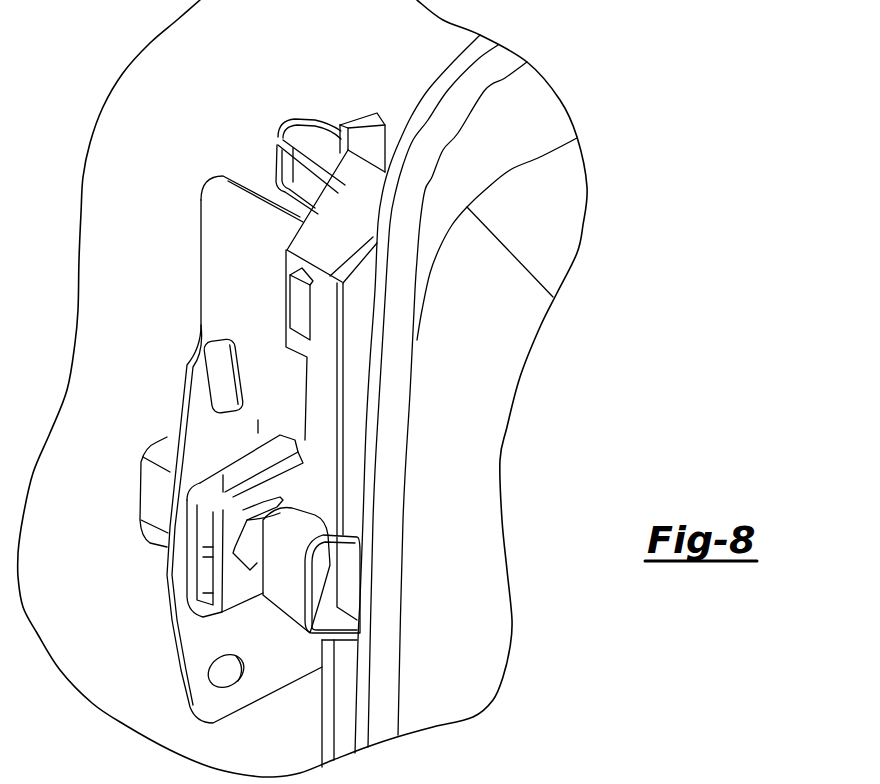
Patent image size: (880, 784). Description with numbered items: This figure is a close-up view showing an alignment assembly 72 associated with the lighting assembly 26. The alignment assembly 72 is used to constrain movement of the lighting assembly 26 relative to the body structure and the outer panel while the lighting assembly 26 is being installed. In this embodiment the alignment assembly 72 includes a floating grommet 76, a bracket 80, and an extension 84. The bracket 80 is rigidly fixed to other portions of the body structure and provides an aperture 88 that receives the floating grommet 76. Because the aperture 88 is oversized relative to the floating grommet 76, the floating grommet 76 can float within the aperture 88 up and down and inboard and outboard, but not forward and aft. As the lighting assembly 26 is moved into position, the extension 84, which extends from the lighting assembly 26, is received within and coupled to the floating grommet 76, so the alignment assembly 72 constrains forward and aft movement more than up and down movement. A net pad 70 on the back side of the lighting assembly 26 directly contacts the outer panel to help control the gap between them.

The lighting assembly 26 is at (322, 388).
The net pad 70 is at (264, 297).
The alignment assembly 72 is at (228, 440).
The floating grommet 76 is at (199, 483).
The bracket 80 is at (221, 471).
The extension 84 is at (234, 565).
The aperture 88 is at (167, 550).